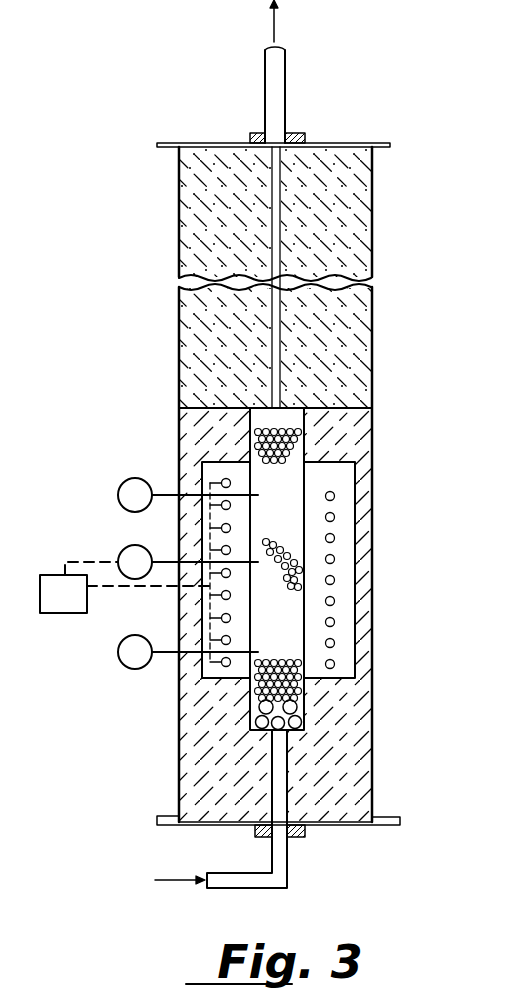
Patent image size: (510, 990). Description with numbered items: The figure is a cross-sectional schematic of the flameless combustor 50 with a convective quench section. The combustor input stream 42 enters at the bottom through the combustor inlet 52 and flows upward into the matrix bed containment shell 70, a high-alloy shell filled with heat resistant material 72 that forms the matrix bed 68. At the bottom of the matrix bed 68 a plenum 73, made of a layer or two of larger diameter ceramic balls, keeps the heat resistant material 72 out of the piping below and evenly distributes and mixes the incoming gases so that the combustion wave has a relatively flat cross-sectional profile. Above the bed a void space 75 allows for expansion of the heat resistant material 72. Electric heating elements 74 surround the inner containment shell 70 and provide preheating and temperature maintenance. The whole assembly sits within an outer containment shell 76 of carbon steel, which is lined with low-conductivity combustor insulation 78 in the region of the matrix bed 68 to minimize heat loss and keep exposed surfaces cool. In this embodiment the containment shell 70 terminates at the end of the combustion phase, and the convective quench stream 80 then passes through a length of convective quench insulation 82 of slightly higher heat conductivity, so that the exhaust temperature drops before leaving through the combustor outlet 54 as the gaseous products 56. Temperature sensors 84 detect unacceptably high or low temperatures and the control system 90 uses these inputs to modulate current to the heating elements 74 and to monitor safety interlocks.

The combustor input stream 42 is at (275, 886).
The flameless combustor 50 is at (423, 356).
The combustor inlet 52 is at (300, 836).
The combustor outlet 54 is at (294, 132).
The gaseous products 56 is at (273, 80).
The matrix bed 68 is at (259, 513).
The matrix bed containment shell 70 is at (258, 609).
The heat resistant material 72 is at (290, 662).
The plenum 73 is at (250, 717).
The heating elements 74 is at (336, 580).
The void space 75 is at (287, 418).
The outer containment shell 76 is at (375, 480).
The combustor insulation 78 is at (343, 732).
The convective quench stream 80 is at (278, 231).
The convective quench insulation 82 is at (350, 200).
The temperature sensors 84 is at (129, 501).
The control system 90 is at (71, 606).